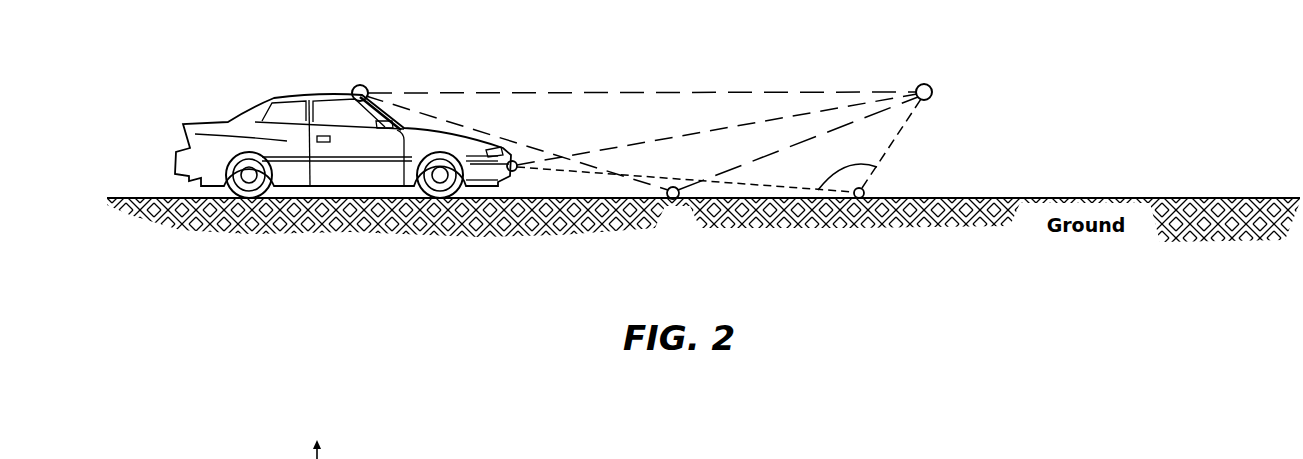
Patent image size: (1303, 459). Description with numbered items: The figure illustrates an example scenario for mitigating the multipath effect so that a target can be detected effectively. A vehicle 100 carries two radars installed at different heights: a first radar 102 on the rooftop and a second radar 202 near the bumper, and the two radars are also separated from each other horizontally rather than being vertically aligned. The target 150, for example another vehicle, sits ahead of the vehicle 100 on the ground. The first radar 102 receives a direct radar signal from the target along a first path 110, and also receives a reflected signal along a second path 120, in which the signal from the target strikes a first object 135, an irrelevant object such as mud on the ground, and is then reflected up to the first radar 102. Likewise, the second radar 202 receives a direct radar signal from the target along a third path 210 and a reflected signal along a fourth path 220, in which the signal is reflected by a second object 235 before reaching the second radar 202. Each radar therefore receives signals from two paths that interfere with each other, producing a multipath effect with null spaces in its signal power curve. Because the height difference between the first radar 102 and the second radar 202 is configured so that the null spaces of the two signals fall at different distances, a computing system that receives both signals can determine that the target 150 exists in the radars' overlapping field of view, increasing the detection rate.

The vehicle 100 is at (213, 123).
The radar 102 is at (358, 85).
The first path 110 is at (660, 88).
The second path 120 is at (499, 100).
The first object 135 is at (673, 199).
The target 150 is at (962, 108).
The second radar 202 is at (513, 171).
The third path 210 is at (652, 140).
The fourth path 220 is at (889, 148).
The second object 235 is at (859, 198).